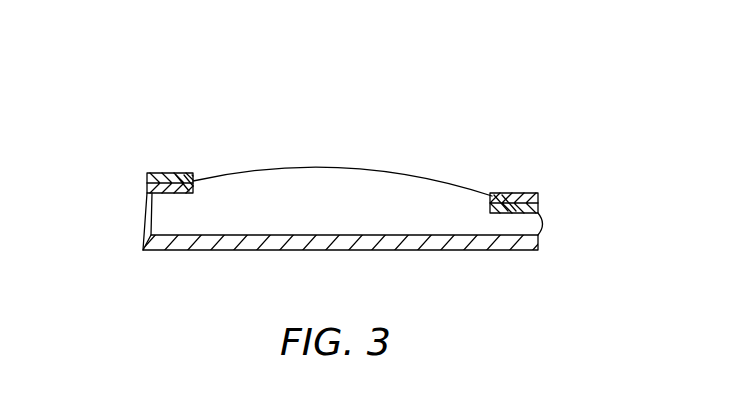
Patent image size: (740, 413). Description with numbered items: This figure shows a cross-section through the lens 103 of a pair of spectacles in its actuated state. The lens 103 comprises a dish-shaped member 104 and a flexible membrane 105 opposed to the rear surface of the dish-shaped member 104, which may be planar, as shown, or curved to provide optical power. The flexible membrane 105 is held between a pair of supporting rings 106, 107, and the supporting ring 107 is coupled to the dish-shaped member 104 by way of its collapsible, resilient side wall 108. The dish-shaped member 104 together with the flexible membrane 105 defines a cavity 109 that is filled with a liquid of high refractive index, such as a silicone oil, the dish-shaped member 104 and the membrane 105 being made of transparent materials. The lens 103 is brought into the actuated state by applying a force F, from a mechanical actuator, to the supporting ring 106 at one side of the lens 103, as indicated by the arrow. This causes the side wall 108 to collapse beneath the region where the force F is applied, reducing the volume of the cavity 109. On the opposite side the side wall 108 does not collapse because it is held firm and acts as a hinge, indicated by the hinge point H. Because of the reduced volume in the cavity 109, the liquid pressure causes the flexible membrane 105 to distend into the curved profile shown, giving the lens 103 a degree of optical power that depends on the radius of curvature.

The lens 103 is at (263, 109).
The dish-shaped member 104 is at (345, 251).
The flexible membrane 105 is at (343, 167).
The supporting ring 106 is at (150, 173).
The supporting ring 107 is at (186, 173).
The side wall 108 is at (142, 227).
The cavity 109 is at (360, 215).
The hinge point H is at (147, 190).
The force F is at (518, 186).